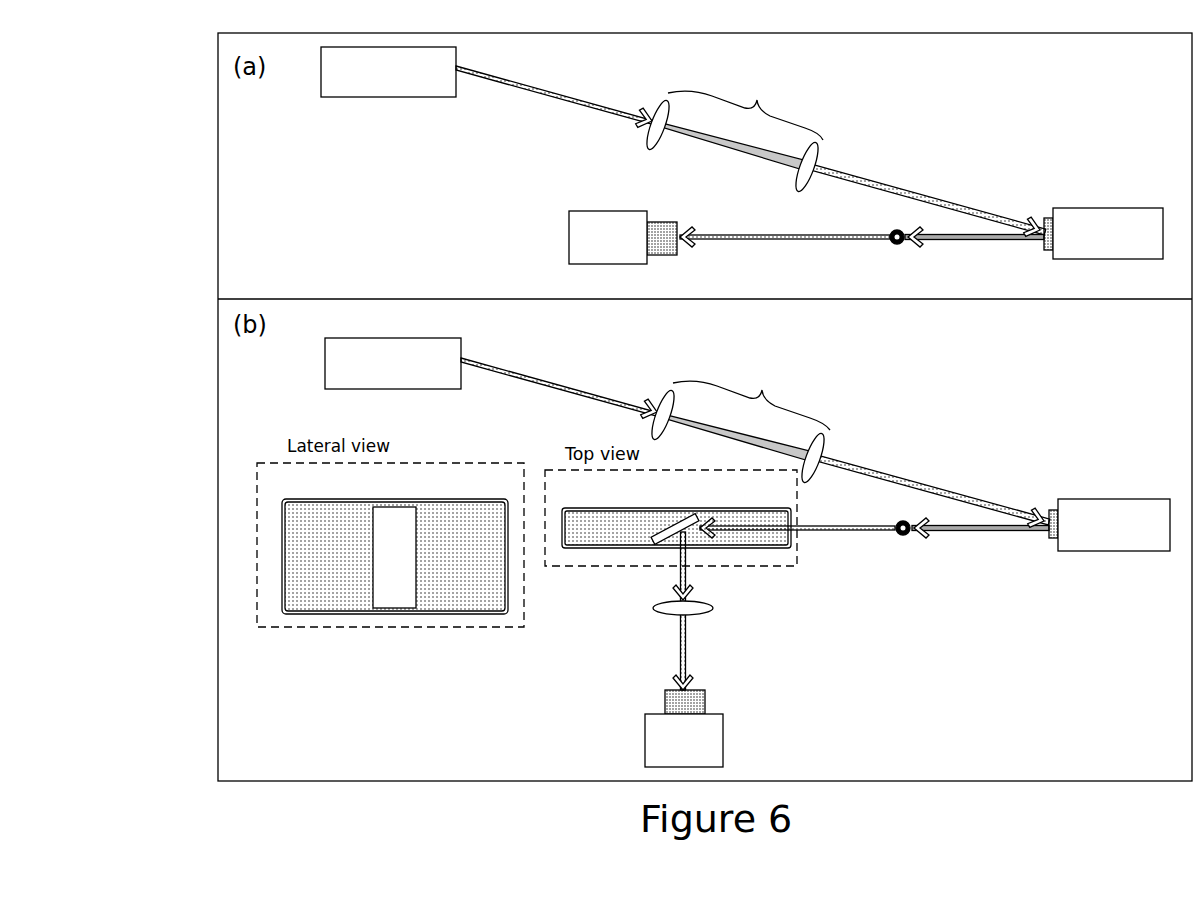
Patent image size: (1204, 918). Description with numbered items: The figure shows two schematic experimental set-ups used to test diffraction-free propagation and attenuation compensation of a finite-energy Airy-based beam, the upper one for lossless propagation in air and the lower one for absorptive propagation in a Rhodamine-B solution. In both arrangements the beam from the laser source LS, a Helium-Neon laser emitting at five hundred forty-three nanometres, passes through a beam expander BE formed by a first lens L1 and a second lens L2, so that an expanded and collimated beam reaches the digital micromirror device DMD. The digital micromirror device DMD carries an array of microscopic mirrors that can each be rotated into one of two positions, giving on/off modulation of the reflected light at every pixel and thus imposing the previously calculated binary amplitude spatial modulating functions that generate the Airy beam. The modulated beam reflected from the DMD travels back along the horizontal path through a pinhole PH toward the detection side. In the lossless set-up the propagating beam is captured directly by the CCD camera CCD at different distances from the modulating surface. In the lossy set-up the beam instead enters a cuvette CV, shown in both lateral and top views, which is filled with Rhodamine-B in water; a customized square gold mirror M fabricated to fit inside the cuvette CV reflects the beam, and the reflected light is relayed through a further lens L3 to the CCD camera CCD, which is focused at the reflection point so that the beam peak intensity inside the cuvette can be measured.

The laser source LS is at (391, 218).
The first lens of beam expander L1 is at (657, 267).
The second lens of beam expander L2 is at (824, 312).
The beam expander BE is at (749, 254).
The digital micromirror device DMD is at (1107, 379).
The pinhole PH is at (900, 397).
The CCD camera CCD is at (646, 489).
The cuvette CV is at (531, 544).
The gold mirror M is at (536, 545).
The third lens L3 is at (699, 608).